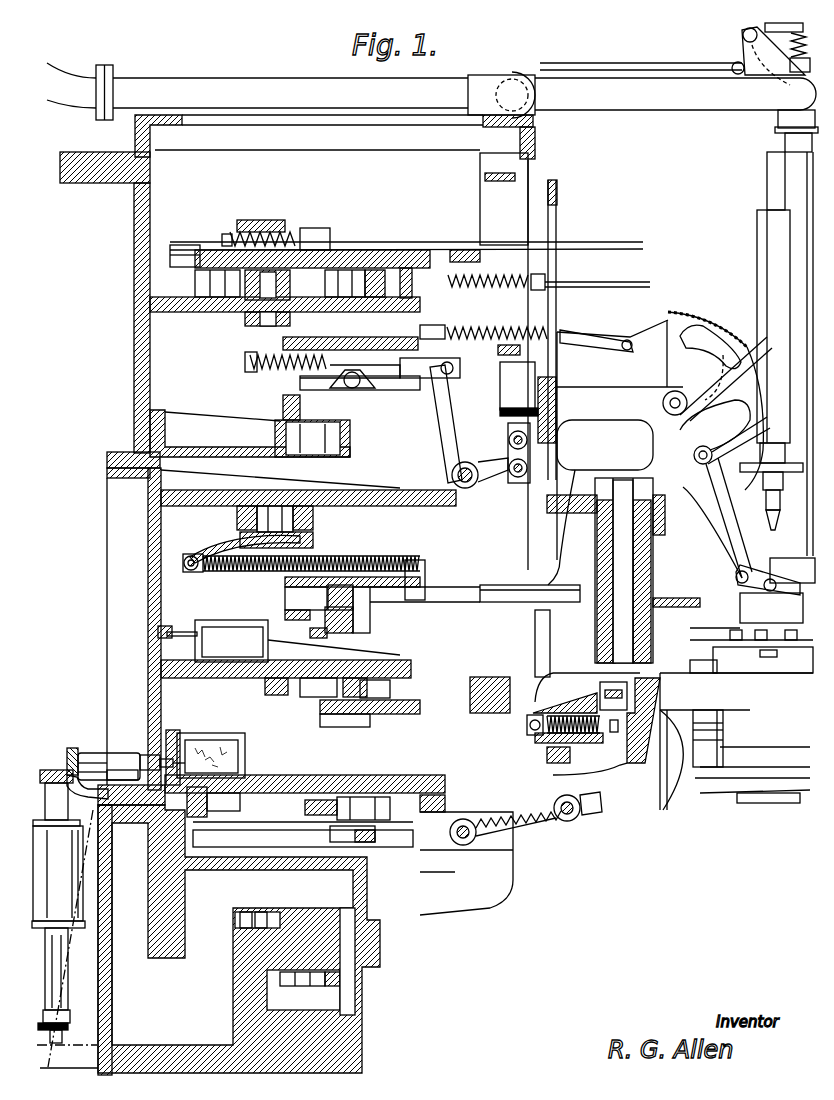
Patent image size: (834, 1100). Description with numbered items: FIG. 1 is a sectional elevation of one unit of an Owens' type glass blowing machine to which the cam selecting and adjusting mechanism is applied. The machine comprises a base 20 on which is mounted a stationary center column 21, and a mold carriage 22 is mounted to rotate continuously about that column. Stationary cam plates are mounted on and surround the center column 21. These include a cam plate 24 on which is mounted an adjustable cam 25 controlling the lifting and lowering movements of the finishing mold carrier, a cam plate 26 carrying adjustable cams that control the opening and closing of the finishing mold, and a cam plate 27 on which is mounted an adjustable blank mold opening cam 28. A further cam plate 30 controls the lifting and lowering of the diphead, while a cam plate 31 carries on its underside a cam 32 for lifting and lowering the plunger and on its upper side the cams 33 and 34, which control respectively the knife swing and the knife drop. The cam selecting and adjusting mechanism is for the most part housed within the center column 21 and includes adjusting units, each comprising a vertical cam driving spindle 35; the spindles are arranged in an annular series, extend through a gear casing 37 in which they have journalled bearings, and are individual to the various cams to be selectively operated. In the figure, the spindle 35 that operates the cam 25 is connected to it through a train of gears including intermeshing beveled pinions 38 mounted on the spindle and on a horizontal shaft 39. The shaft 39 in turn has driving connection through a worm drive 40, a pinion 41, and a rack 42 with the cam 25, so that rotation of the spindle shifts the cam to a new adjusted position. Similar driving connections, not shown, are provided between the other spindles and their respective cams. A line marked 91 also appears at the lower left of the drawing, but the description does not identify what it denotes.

The base 20 is at (362, 1050).
The center column 21 is at (134, 383).
The mold carriage 22 is at (513, 870).
The cam plate 24 is at (315, 775).
The adjustable cam 25 is at (245, 805).
The cam plate 26 is at (255, 676).
The cam plate 27 is at (225, 507).
The blank mold opening cam 28 is at (314, 522).
The cam plate 30 is at (248, 457).
The cam plate 31 is at (200, 312).
The cam 32 is at (416, 312).
The cam 33 is at (365, 296).
The cam 34 is at (210, 292).
The cam driving spindle 35 is at (100, 980).
The gear casing 37 is at (92, 880).
The beveled pinions 38 is at (52, 770).
The horizontal shaft 39 is at (150, 755).
The worm drive 40 is at (246, 746).
The pinion 41 is at (198, 822).
The rack 42 is at (300, 808).
The axis line 91 is at (58, 1050).